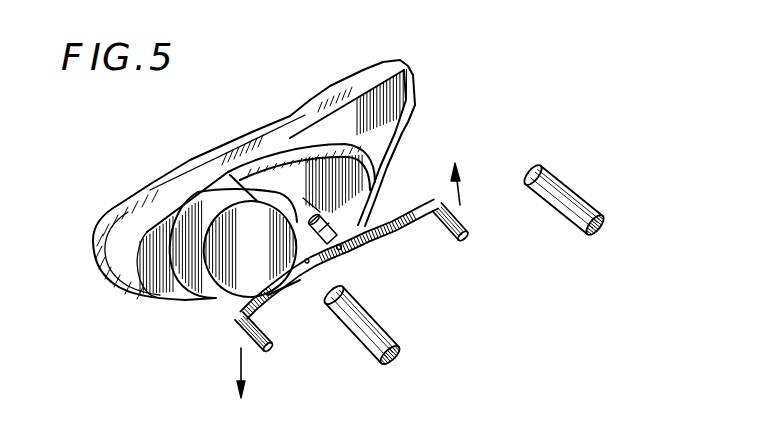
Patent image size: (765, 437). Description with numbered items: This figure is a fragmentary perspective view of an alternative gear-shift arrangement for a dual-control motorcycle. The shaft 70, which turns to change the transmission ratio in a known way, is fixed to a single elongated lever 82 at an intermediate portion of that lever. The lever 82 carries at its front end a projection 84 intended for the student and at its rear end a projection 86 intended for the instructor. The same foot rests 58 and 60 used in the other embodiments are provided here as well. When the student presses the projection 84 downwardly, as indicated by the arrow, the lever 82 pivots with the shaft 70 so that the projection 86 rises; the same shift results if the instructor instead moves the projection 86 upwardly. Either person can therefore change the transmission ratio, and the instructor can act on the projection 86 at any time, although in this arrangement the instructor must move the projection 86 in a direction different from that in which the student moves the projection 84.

The foot rest 58 is at (370, 330).
The foot rest 60 is at (580, 213).
The shaft 70 is at (332, 212).
The elongated lever 82 is at (378, 242).
The projection 84 is at (273, 349).
The projection 86 is at (465, 227).